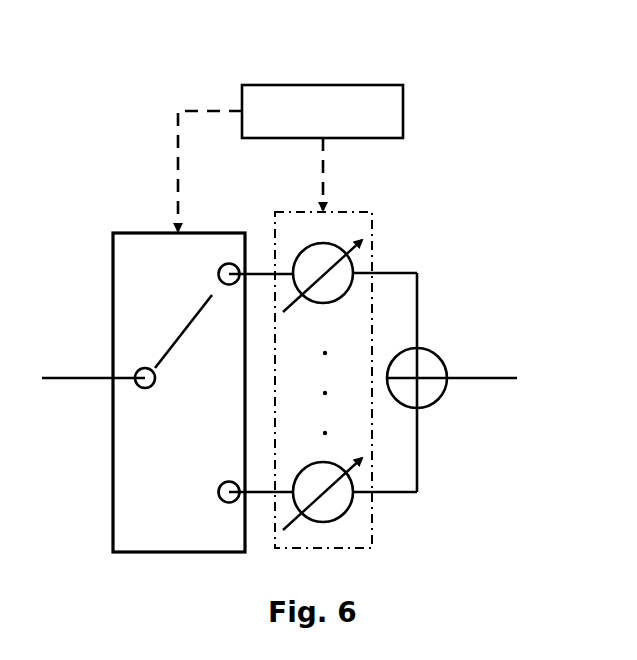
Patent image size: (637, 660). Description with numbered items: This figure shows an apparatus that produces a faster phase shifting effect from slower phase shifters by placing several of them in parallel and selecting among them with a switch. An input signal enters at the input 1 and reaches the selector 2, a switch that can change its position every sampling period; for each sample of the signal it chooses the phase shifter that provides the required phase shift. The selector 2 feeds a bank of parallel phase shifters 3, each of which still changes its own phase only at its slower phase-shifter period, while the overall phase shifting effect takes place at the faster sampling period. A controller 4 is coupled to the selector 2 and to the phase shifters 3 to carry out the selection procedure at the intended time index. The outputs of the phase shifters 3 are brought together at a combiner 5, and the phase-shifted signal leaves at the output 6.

The input port 1 is at (93, 355).
The switch 2 is at (203, 375).
The bank of variable elements 3 is at (332, 373).
The controller 4 is at (290, 138).
The combiner 5 is at (420, 359).
The output port 6 is at (484, 353).